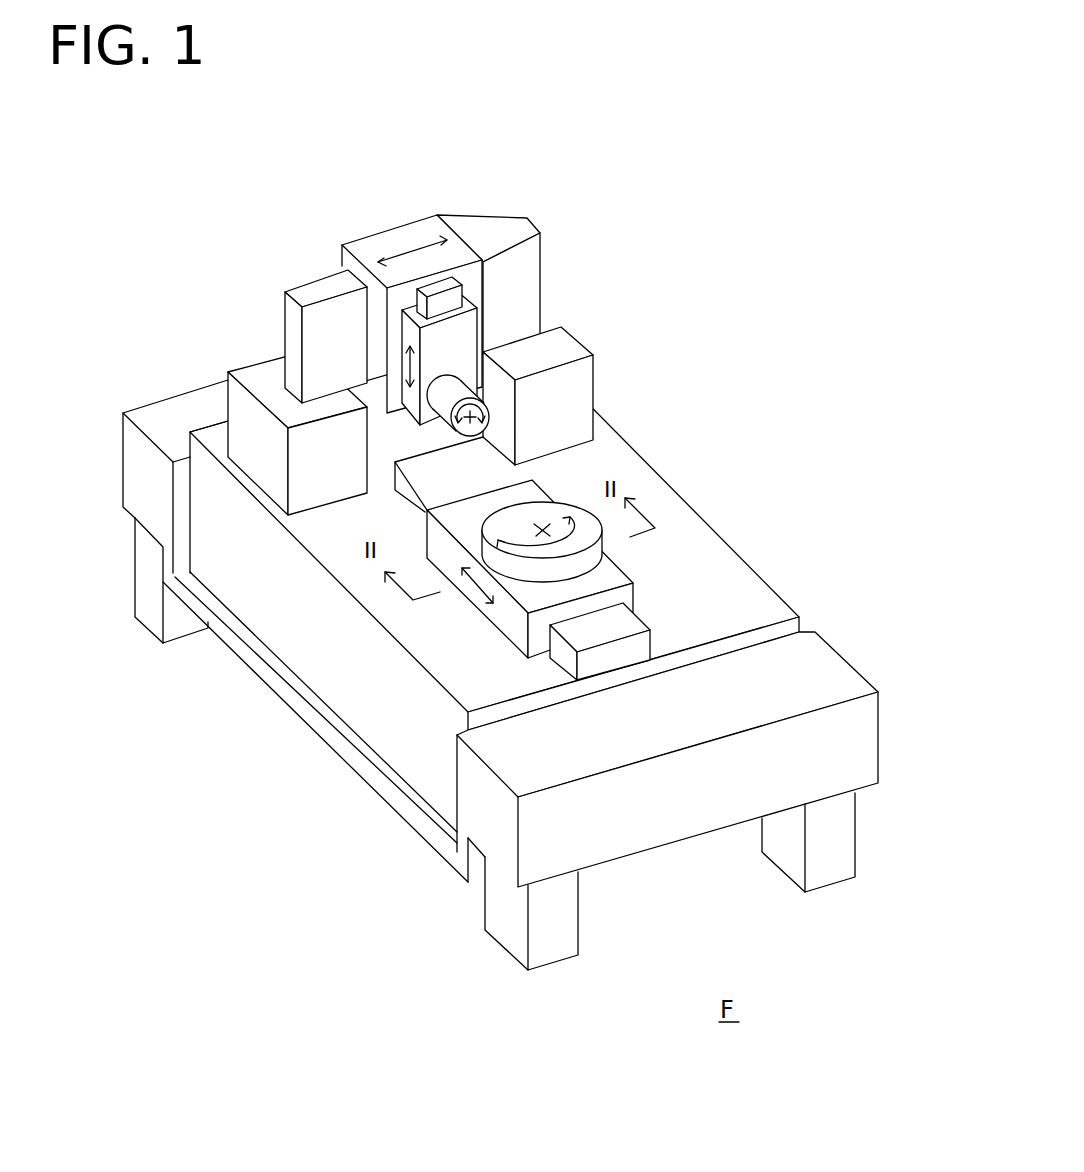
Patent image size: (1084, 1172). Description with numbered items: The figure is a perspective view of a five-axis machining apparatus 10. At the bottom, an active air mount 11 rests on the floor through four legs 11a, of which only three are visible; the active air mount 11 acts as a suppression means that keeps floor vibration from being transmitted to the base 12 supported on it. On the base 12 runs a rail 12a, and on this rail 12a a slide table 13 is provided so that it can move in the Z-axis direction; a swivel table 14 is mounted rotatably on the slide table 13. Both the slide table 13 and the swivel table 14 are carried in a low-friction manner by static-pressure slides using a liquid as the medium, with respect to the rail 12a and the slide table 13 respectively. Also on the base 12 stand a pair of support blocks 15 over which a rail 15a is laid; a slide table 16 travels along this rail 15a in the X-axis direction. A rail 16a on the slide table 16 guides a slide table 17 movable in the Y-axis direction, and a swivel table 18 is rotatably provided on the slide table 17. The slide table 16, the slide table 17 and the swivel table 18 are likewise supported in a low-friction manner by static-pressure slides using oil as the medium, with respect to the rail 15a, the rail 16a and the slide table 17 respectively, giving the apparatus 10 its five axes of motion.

The five-axis machining apparatus 10 is at (540, 168).
The active air mount 11 is at (832, 672).
The legs 11a is at (145, 577).
The base 12 is at (700, 541).
The rail 12a is at (622, 630).
The slide table 13 is at (473, 603).
The swivel table 14 is at (542, 513).
The support blocks 15 is at (257, 372).
The rail 15a is at (492, 238).
The slide table 16 is at (390, 243).
The rail 16a is at (463, 295).
The slide table 17 is at (412, 398).
The swivel table 18 is at (460, 384).